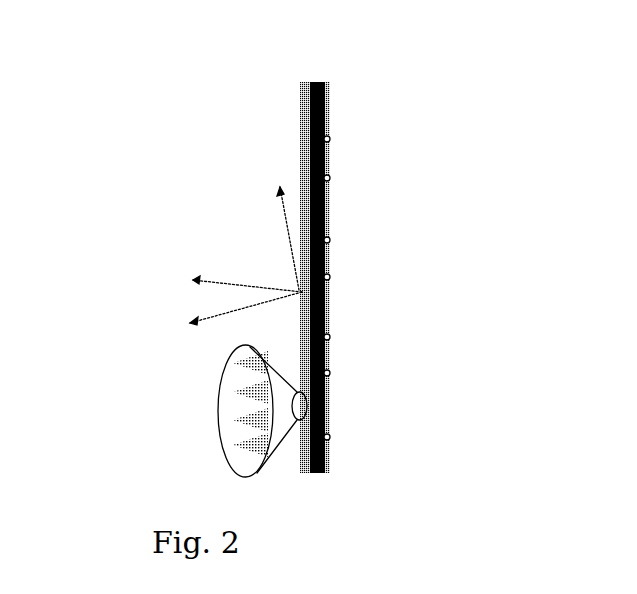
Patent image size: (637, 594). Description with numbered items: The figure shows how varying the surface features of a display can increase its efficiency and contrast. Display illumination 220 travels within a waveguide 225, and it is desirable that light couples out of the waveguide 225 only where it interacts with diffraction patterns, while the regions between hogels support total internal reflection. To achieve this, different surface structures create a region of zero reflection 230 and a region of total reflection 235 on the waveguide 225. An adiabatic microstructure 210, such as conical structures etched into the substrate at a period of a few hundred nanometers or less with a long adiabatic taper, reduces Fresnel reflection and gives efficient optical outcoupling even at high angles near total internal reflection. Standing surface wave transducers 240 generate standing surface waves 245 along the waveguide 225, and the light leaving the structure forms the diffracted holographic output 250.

The adiabatic microstructure 210 is at (217, 413).
The display illumination 220 is at (318, 123).
The waveguide 225 is at (330, 158).
The region of zero reflection 230 is at (298, 103).
The region of total reflection 235 is at (298, 158).
The standing surface wave transducers 240 is at (330, 138).
The standing surface waves 245 is at (332, 222).
The light rays 250 is at (285, 220).